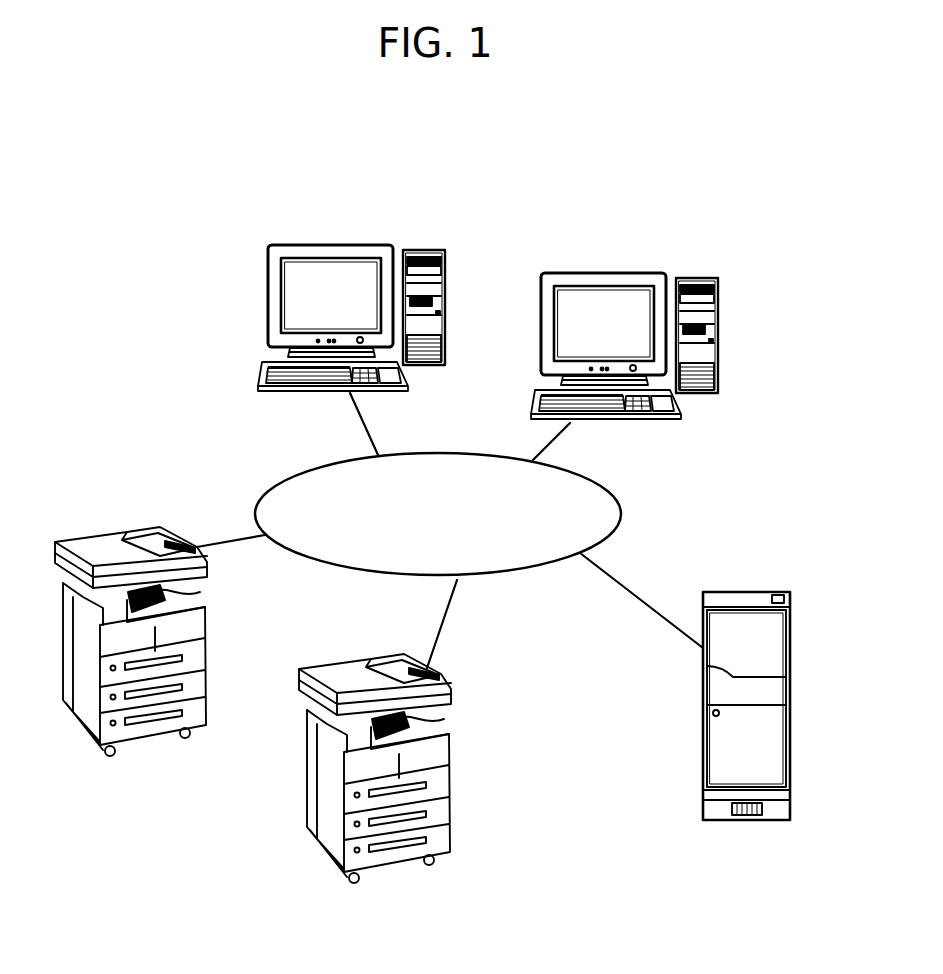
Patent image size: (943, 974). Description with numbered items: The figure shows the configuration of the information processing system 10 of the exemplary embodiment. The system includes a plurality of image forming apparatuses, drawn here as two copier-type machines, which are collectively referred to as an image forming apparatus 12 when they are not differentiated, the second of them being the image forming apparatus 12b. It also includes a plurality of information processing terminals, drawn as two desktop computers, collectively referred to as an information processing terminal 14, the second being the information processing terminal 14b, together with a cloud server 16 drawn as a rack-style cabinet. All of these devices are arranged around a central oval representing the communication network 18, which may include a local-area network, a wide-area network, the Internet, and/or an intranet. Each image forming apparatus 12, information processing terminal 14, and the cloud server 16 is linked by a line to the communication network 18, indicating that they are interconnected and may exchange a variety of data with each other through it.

The information processing system 10 is at (554, 173).
The image forming apparatus 12 is at (121, 533).
The image forming apparatus 12b is at (319, 668).
The information processing terminal 14 is at (332, 248).
The information processing terminal 14b is at (636, 275).
The cloud server 16 is at (758, 600).
The communication network 18 is at (616, 498).